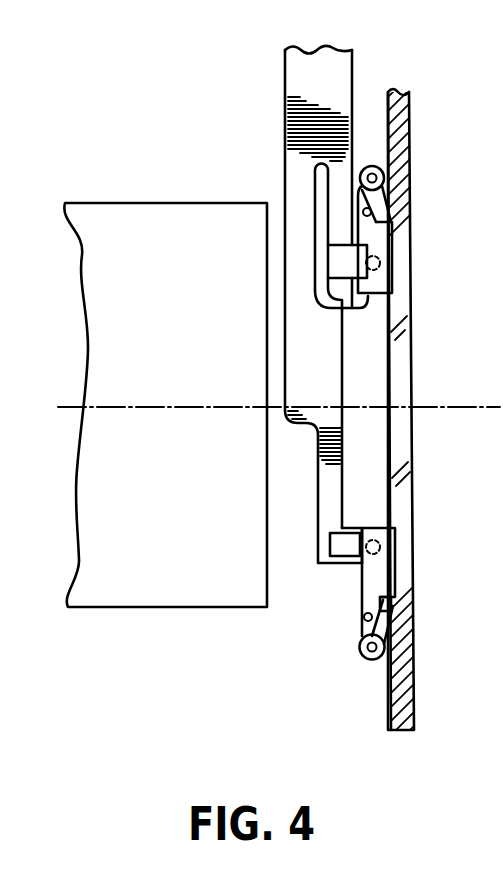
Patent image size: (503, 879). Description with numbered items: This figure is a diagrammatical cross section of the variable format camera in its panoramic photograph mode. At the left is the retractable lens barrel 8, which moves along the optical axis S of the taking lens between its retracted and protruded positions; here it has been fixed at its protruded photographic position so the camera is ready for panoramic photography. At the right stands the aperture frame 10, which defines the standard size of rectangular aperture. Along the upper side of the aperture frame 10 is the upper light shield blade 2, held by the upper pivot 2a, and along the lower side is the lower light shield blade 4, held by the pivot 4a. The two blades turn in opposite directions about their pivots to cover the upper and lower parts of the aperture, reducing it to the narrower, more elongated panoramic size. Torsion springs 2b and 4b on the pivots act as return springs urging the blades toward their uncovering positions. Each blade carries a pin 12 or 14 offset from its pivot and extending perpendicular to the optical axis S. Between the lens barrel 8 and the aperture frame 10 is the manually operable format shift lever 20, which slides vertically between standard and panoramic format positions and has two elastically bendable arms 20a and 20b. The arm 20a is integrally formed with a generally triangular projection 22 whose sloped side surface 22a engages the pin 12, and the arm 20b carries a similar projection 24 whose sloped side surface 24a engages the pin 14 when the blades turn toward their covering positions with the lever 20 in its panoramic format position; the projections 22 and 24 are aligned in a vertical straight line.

The upper light shield blade 2 is at (385, 245).
The upper pivot 2a is at (385, 170).
The torsion spring 2b is at (390, 202).
The lower light shield blade 4 is at (385, 578).
The lower pivot 4a is at (365, 660).
The torsion spring 4b is at (388, 620).
The lens barrel 8 is at (111, 212).
The aperture frame 10 is at (411, 402).
The pin 12 is at (378, 265).
The pin 14 is at (382, 542).
The format shift lever 20 is at (298, 76).
The bendable arm 20a is at (315, 184).
The bendable arm 20b is at (325, 482).
The projection 22 is at (340, 308).
The side surface 22a is at (343, 262).
The projection 24 is at (330, 525).
The side surface 24a is at (350, 560).
The optical axis S is at (180, 410).